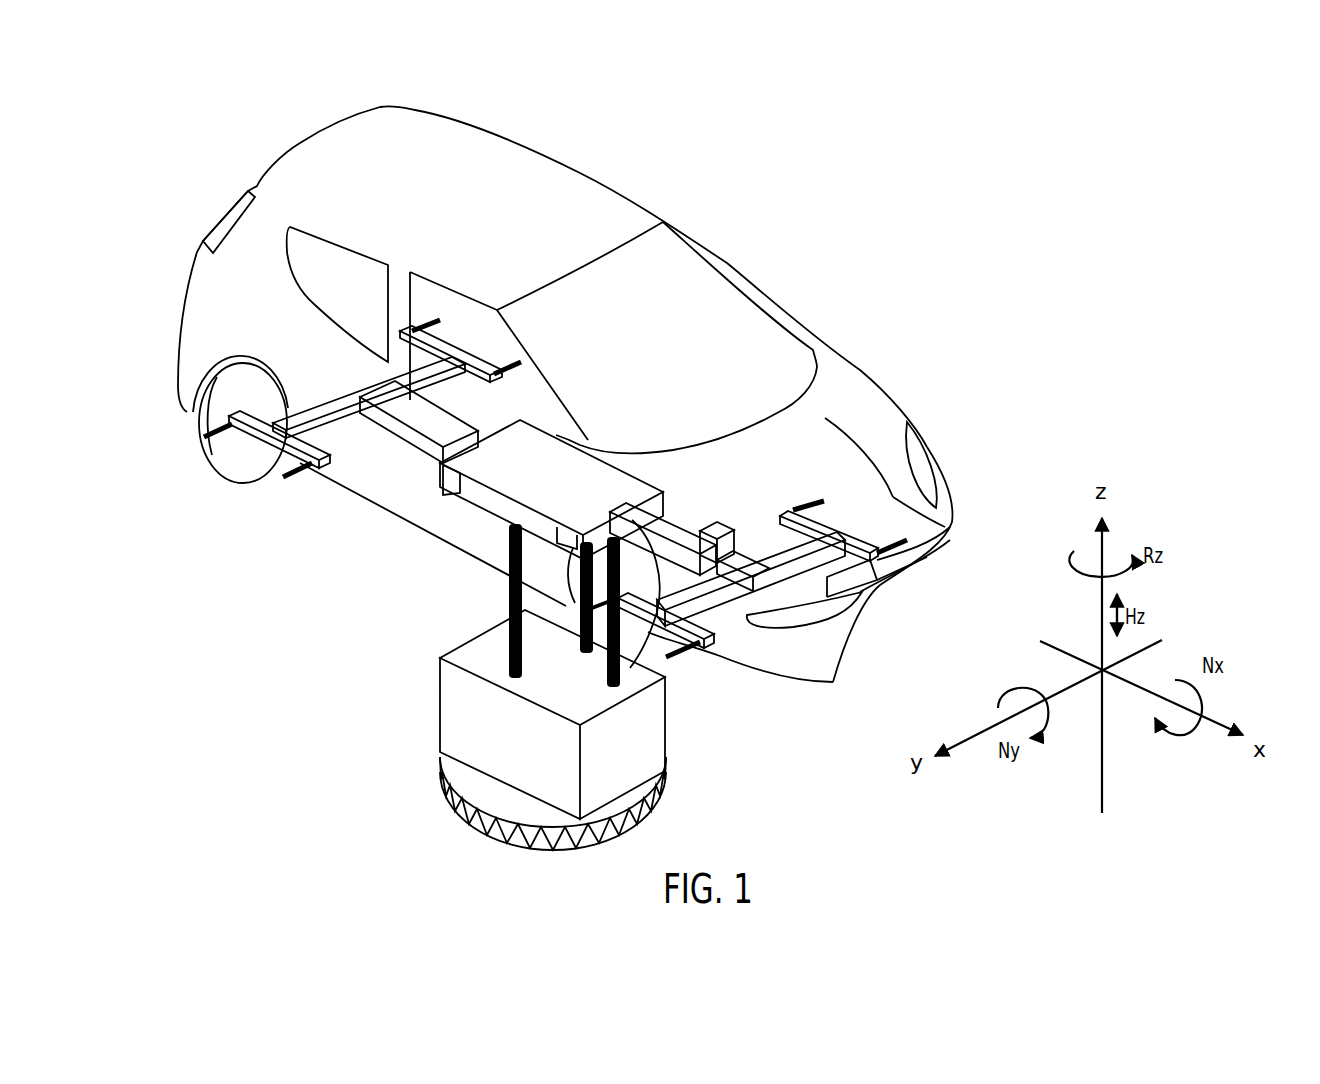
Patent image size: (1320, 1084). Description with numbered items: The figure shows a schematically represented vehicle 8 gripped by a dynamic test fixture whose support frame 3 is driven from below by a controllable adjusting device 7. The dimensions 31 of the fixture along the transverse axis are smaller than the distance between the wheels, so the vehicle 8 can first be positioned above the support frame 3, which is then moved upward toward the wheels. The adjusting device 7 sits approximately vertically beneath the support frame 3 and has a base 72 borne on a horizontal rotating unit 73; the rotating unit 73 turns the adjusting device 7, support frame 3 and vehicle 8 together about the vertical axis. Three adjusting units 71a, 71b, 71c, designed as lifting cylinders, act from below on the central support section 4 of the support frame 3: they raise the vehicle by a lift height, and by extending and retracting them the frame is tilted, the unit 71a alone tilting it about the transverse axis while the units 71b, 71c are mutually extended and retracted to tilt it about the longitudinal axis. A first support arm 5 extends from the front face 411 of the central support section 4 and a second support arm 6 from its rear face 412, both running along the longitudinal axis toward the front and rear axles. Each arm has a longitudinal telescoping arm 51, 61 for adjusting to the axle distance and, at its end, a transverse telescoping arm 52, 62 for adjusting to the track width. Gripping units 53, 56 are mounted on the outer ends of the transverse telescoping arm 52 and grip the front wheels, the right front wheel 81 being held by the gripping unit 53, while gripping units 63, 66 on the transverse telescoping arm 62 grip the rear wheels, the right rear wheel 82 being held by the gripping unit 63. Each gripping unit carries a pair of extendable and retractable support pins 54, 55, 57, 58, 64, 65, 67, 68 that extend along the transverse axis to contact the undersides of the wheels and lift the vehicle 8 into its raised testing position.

The support frame 3 is at (525, 476).
The central support section 4 is at (525, 489).
The front face 411 is at (598, 528).
The rear face 412 is at (443, 464).
The first support arm 5 is at (781, 588).
The longitudinal telescoping arm 51 is at (718, 552).
The transverse telescoping arm 52 is at (750, 563).
The gripping unit 53 is at (658, 652).
The support pin 54 is at (605, 625).
The support pin 55 is at (682, 655).
The gripping unit 56 is at (837, 530).
The support pin 57 is at (813, 497).
The support pin 58 is at (920, 536).
The second support arm 6 is at (371, 394).
The longitudinal telescoping arm 61 is at (407, 437).
The transverse telescoping arm 62 is at (348, 392).
The gripping unit 63 is at (263, 440).
The support pin 64 is at (217, 447).
The support pin 65 is at (293, 480).
The gripping unit 66 is at (453, 347).
The support pin 67 is at (438, 318).
The support pin 68 is at (520, 361).
The controllable adjusting device 7 is at (508, 687).
The adjusting unit 71a is at (606, 683).
The adjusting unit 71b is at (578, 628).
The adjusting unit 71c is at (508, 600).
The base 72 is at (453, 743).
The horizontal rotating unit 73 is at (440, 790).
The vehicle 8 is at (433, 131).
The right front wheel 81 is at (647, 662).
The right rear wheel 82 is at (210, 418).
The dimensions 31 is at (833, 680).